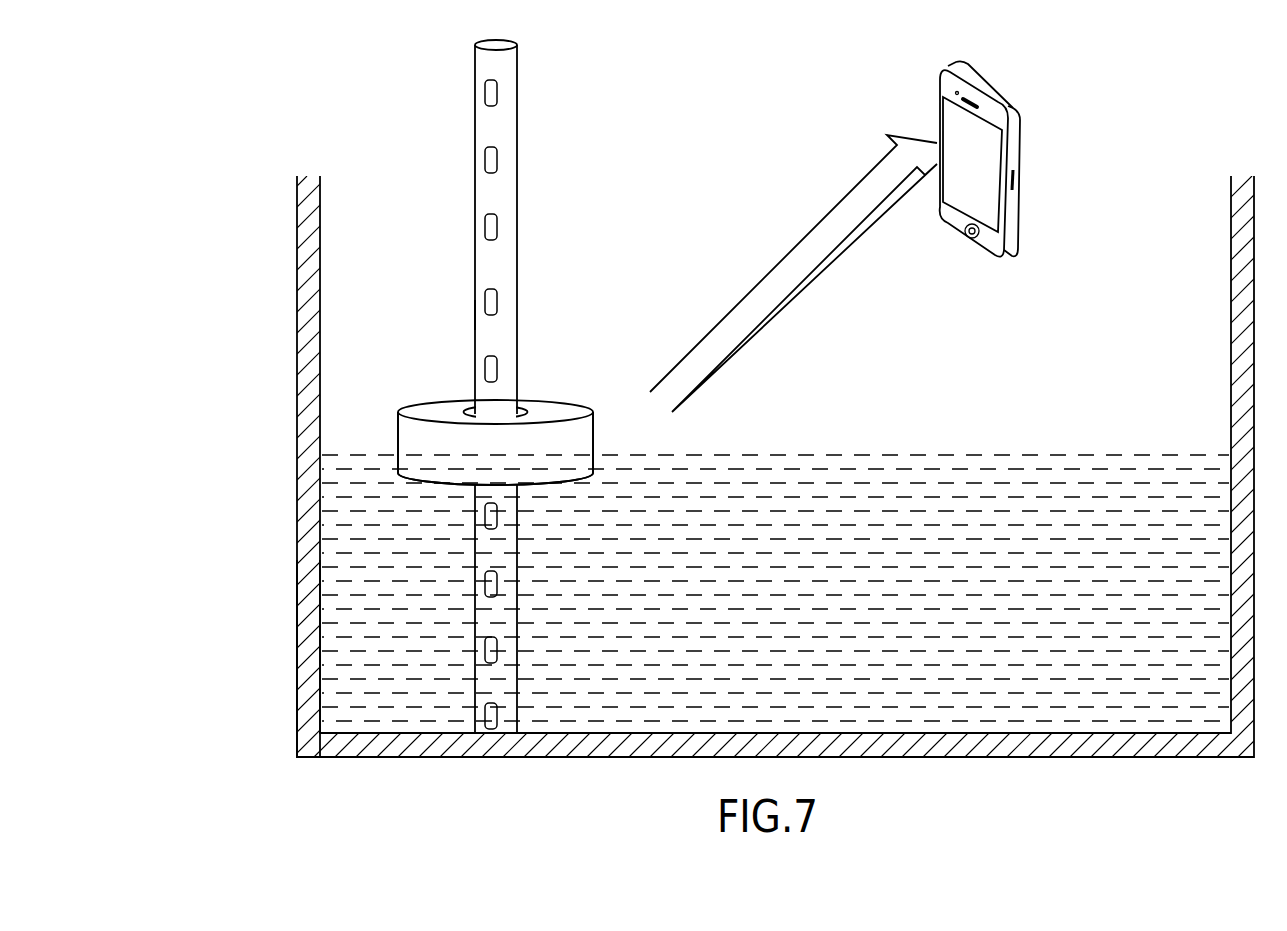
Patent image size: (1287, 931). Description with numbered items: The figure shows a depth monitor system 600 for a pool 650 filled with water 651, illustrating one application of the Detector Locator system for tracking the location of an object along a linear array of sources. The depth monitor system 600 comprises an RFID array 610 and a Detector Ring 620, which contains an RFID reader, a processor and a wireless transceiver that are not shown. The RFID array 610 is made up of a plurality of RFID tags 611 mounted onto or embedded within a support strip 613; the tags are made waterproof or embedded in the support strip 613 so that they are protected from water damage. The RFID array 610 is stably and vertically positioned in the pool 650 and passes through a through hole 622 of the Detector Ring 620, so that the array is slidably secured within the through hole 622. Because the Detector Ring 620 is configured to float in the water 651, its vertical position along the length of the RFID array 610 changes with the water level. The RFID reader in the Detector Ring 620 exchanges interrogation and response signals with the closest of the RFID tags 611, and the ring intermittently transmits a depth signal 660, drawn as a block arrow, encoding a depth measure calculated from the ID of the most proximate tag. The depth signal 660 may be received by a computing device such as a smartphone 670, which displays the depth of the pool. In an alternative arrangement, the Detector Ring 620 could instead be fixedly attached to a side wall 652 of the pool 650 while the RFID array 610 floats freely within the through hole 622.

The depth monitor system 600 is at (287, 96).
The RFID array 610 is at (426, 386).
The RFID tags 611 is at (476, 230).
The support strip 613 is at (476, 310).
The Detector Ring 620 is at (578, 405).
The through hole 622 is at (395, 432).
The pool 650 is at (297, 354).
The water 651 is at (960, 455).
The side wall 652 is at (297, 597).
The depth signal 660 is at (810, 228).
The smartphone 670 is at (1020, 140).